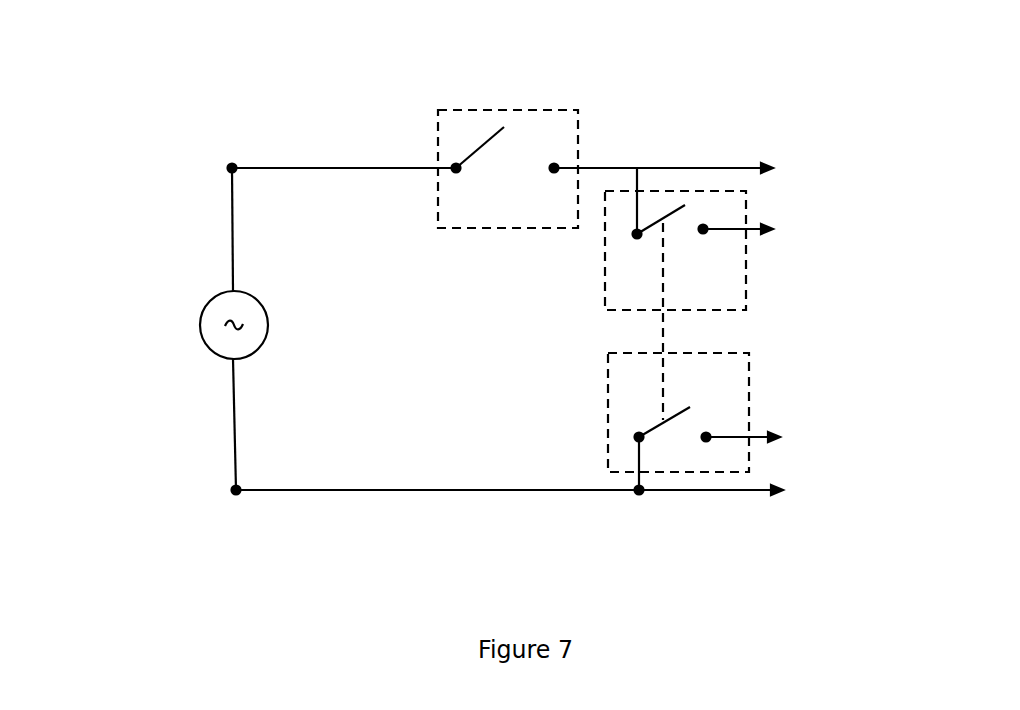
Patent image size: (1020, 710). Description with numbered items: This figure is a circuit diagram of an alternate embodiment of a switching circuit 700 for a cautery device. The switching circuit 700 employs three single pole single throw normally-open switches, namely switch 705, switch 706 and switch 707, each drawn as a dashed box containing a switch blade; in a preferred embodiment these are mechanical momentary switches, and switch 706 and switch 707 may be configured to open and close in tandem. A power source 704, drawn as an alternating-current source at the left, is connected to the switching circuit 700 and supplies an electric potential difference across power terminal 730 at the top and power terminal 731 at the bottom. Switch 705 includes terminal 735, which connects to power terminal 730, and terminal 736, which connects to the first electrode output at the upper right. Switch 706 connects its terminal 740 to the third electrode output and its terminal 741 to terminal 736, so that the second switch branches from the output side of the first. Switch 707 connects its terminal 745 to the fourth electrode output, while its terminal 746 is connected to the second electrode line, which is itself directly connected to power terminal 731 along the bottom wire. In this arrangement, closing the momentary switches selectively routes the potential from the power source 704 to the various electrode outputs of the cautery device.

The switching circuit 700 is at (158, 175).
The power source 704 is at (200, 313).
The switch 705 is at (502, 110).
The switch 706 is at (598, 277).
The switch 707 is at (752, 363).
The power terminal 730 is at (231, 162).
The power terminal 731 is at (236, 492).
The terminal 735 is at (454, 171).
The terminal 736 is at (557, 162).
The terminal 740 is at (705, 231).
The terminal 741 is at (635, 236).
The terminal 745 is at (708, 436).
The terminal 746 is at (638, 440).